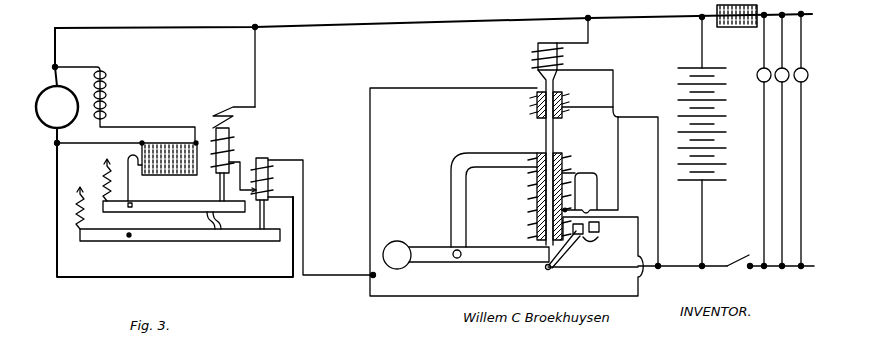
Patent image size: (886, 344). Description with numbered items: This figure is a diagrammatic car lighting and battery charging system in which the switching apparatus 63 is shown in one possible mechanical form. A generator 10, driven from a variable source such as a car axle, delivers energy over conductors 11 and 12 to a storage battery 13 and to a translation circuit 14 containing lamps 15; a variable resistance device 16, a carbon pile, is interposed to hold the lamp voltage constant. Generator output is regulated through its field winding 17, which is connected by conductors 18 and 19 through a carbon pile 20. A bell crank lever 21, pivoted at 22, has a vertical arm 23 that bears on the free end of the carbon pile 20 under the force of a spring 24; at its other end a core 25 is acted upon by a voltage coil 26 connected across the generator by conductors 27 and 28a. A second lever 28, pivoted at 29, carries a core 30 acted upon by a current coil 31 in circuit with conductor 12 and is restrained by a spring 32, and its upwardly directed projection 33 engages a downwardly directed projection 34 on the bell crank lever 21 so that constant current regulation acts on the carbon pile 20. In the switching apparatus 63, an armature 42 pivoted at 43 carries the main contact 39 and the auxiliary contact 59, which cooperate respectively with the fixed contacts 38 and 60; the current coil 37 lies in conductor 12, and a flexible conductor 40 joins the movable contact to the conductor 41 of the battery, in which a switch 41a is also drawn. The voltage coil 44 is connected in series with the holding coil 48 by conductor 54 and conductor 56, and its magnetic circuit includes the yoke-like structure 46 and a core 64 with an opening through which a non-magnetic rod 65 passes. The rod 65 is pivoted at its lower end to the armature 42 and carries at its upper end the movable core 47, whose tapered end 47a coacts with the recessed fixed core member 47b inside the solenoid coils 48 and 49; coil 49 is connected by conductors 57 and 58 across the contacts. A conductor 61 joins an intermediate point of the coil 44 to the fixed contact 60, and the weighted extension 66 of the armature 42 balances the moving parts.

The generator 10 is at (47, 116).
The conductor 11 is at (382, 30).
The conductor 12 is at (283, 278).
The storage battery 13 is at (680, 100).
The translation circuit 14 is at (808, 140).
The lamps 15 is at (781, 84).
The variable resistance device 16 is at (741, 28).
The field winding 17 is at (106, 78).
The conductor 18 is at (143, 126).
The conductor 19 is at (81, 142).
The carbon pile 20 is at (170, 143).
The bell crank lever 21 is at (180, 203).
The pivot 22 is at (128, 208).
The vertical arm 23 is at (139, 171).
The spring 24 is at (101, 170).
The core 25 is at (231, 150).
The voltage coil 26 is at (234, 118).
The conductor 27 is at (258, 62).
The lever 28 is at (273, 243).
The conductor 28a is at (257, 160).
The pivot 29 is at (129, 238).
The core 30 is at (280, 162).
The current coil 31 is at (270, 181).
The spring 32 is at (77, 198).
The upwardly directed projection 33 is at (213, 231).
The downwardly directed projection 34 is at (207, 215).
The current coil 37 is at (537, 230).
The fixed contact 38 is at (598, 224).
The movable switching member 39 is at (598, 238).
The flexible conductor 40 is at (545, 270).
The conductor 41 is at (722, 269).
The switch 41a is at (746, 257).
The armature 42 is at (504, 264).
The pivot 43 is at (455, 258).
The voltage coil 44 is at (537, 192).
The yoke-like structure 46 is at (451, 174).
The movable core 47 is at (538, 46).
The tapered upper end 47a is at (541, 77).
The fixed core member 47b is at (537, 100).
The holding coil 48 is at (558, 55).
The coil 49 is at (565, 108).
The conductor 54 is at (598, 36).
The conductor 56 is at (583, 172).
The conductor 57 is at (372, 152).
The conductor 58 is at (657, 128).
The auxiliary contact member 59 is at (582, 252).
The fixed contact 60 is at (604, 224).
The conductor 61 is at (598, 178).
The switching apparatus 63 is at (490, 137).
The core 64 is at (537, 212).
The rod 65 is at (546, 134).
The weight 66 is at (402, 243).